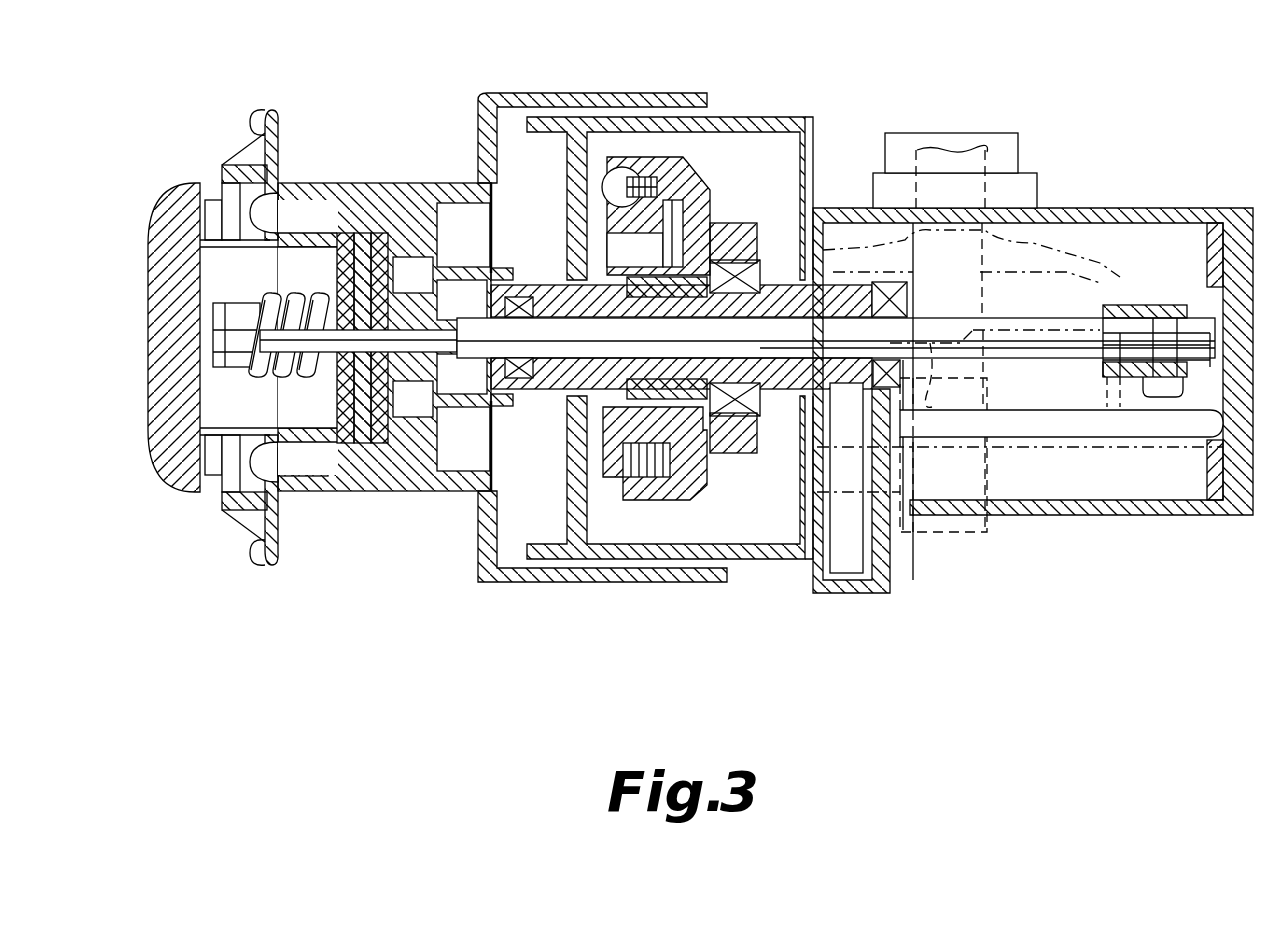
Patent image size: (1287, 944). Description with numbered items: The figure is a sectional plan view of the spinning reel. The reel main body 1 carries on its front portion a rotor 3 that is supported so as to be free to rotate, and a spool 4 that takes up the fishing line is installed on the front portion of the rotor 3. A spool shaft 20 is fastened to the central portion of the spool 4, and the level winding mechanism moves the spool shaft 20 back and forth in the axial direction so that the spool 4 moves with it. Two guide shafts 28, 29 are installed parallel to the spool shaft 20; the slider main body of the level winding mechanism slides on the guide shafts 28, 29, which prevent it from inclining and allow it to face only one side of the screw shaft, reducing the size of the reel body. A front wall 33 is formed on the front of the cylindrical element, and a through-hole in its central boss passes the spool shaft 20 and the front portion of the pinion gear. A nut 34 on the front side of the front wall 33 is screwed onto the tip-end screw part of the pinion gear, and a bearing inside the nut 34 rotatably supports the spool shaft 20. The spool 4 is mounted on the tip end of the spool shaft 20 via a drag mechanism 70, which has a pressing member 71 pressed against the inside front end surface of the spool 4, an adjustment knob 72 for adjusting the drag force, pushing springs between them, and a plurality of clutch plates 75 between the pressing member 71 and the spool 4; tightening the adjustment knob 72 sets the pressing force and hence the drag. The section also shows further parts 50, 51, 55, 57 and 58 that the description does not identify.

The reel main body 1 is at (1135, 210).
The rotor 3 is at (790, 117).
The spool 4 is at (418, 183).
The spool shaft 20 is at (930, 358).
The guide shaft 28 is at (1090, 333).
The guide shaft 29 is at (1063, 422).
The front wall 33 is at (563, 447).
The nut 34 is at (545, 280).
The electromagnetic clutch 50 is at (663, 530).
The clutch hub 51 is at (712, 497).
The coil 55 is at (640, 503).
The electromagnet 57 is at (612, 227).
The armature 58 is at (610, 480).
The drag mechanism 70 is at (227, 344).
The pressing member 71 is at (310, 478).
The adjustment knob 72 is at (177, 437).
The clutch plates 75 is at (366, 445).